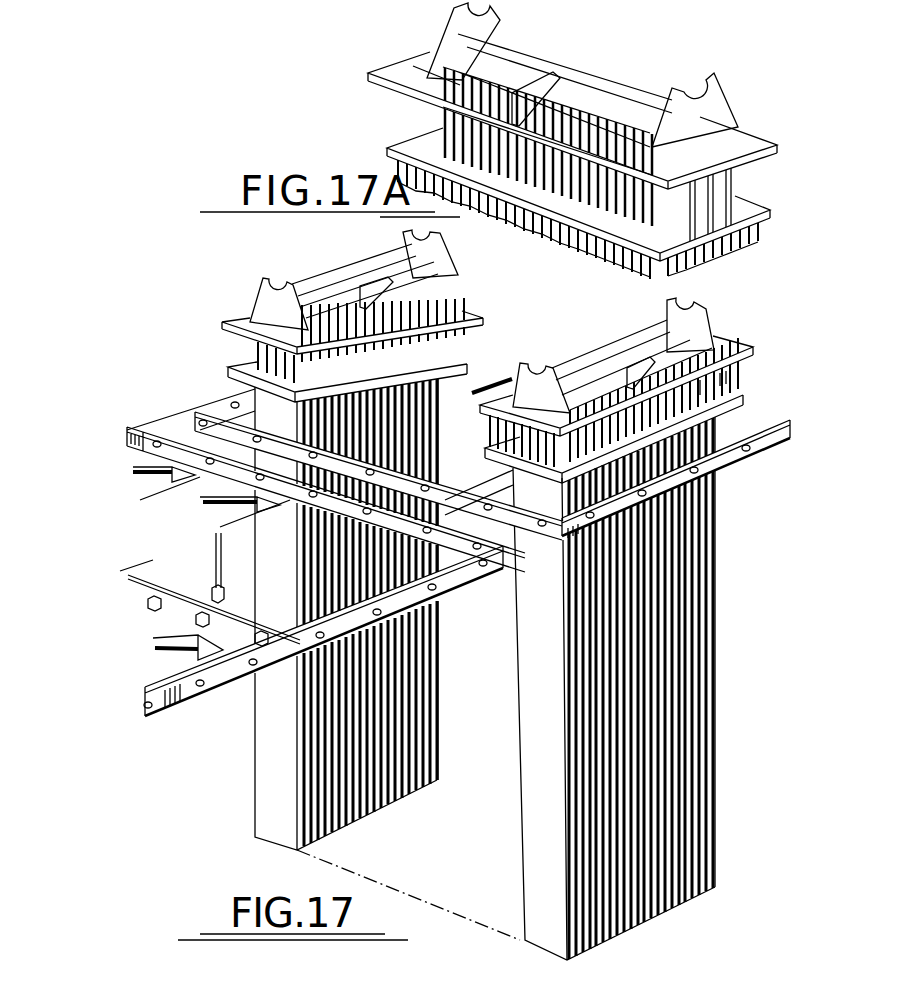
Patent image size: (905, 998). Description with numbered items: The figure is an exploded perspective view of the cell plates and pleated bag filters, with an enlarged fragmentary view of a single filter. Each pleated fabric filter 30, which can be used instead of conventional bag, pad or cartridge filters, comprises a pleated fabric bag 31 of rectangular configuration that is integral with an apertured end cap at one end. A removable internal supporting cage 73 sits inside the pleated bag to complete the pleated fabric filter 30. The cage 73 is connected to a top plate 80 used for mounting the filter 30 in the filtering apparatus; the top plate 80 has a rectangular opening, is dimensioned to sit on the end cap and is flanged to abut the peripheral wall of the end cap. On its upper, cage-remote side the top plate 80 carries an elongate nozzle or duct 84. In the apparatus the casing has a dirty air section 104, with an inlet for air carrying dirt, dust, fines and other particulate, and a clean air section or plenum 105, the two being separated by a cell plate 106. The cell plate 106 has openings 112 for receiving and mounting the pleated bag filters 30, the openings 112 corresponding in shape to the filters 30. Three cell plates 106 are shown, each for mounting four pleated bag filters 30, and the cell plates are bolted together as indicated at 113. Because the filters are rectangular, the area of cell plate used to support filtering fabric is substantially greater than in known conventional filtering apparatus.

In FIG. 17A, the pleated fabric filter 30 is at (380, 70).
In FIG. 17, the pleated fabric filter 30 is at (482, 304).
In FIG. 17A, the pleated fabric bag 31 is at (733, 236).
In FIG. 17, the pleated fabric bag 31 is at (676, 570).
In FIG. 17A, the internal supporting cage 73 is at (742, 183).
In FIG. 17, the internal supporting cage 73 is at (708, 379).
In FIG. 17A, the top plate 80 is at (736, 128).
In FIG. 17A, the elongate nozzle or duct 84 is at (612, 67).
In FIG. 17, the dirty air section 104 is at (246, 713).
In FIG. 17, the clean air section or plenum 105 is at (548, 340).
In FIG. 17, the cell plate 106 is at (446, 552).
In FIG. 17, the openings 112 is at (183, 585).
In FIG. 17, the bolts 113 is at (198, 621).